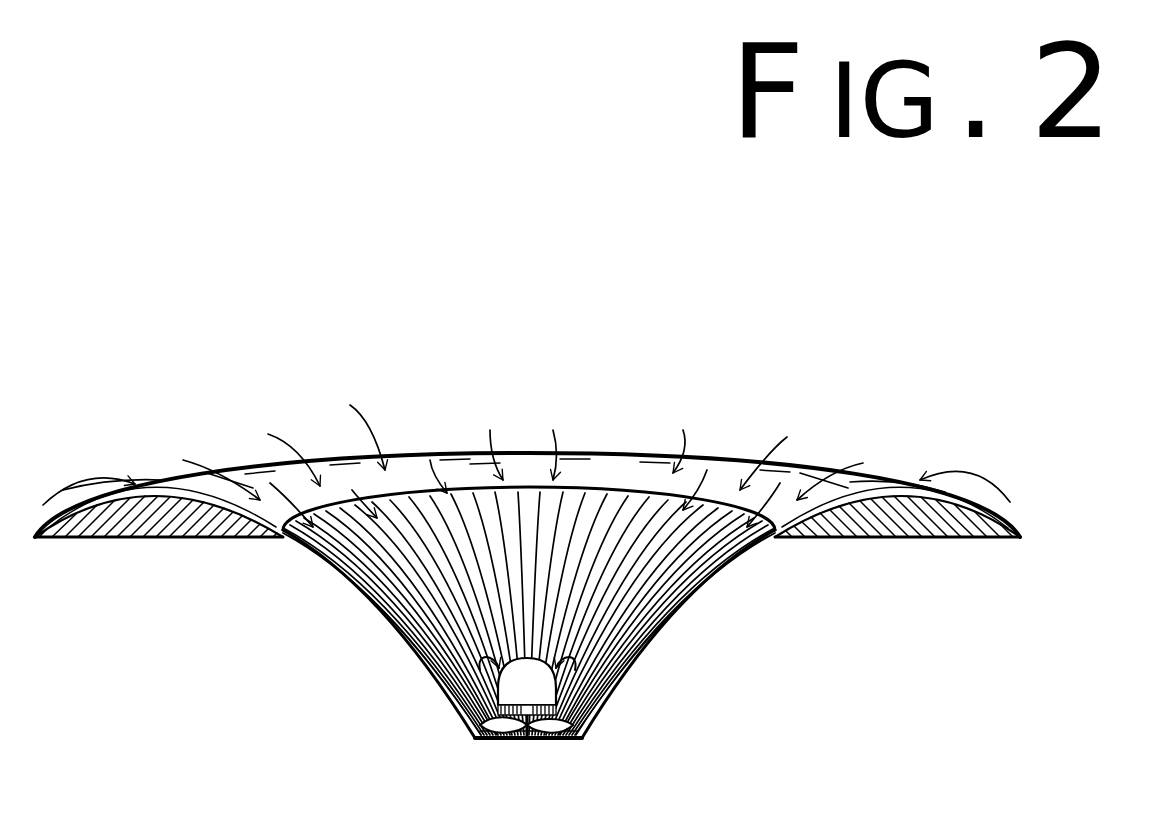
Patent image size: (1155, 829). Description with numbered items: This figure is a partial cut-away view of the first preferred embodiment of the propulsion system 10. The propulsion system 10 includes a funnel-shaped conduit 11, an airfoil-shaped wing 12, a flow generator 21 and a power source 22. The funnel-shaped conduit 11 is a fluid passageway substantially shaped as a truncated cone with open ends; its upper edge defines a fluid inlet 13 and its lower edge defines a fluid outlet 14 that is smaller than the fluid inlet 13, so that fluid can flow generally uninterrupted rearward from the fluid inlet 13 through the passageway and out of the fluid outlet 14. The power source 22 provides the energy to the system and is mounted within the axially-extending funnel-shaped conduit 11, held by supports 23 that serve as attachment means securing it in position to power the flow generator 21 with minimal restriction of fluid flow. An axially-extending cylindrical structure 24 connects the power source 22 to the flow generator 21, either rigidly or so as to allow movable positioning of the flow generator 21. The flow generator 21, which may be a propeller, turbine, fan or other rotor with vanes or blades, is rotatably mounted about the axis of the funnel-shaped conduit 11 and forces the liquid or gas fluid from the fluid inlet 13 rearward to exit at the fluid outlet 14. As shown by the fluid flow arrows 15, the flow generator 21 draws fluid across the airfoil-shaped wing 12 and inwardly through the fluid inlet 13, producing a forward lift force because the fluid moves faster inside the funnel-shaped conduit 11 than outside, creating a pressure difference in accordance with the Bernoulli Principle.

The propulsion system 10 is at (402, 205).
The funnel-shaped conduit 11 is at (690, 583).
The airfoil-shaped wing 12 is at (142, 537).
The fluid inlet 13 is at (584, 487).
The fluid outlet 14 is at (548, 738).
The fluid flow arrows 15 is at (293, 462).
The flow generator 21 is at (485, 738).
The power source 22 is at (500, 690).
The supports 23 is at (563, 668).
The cylindrical structure 24 is at (480, 722).